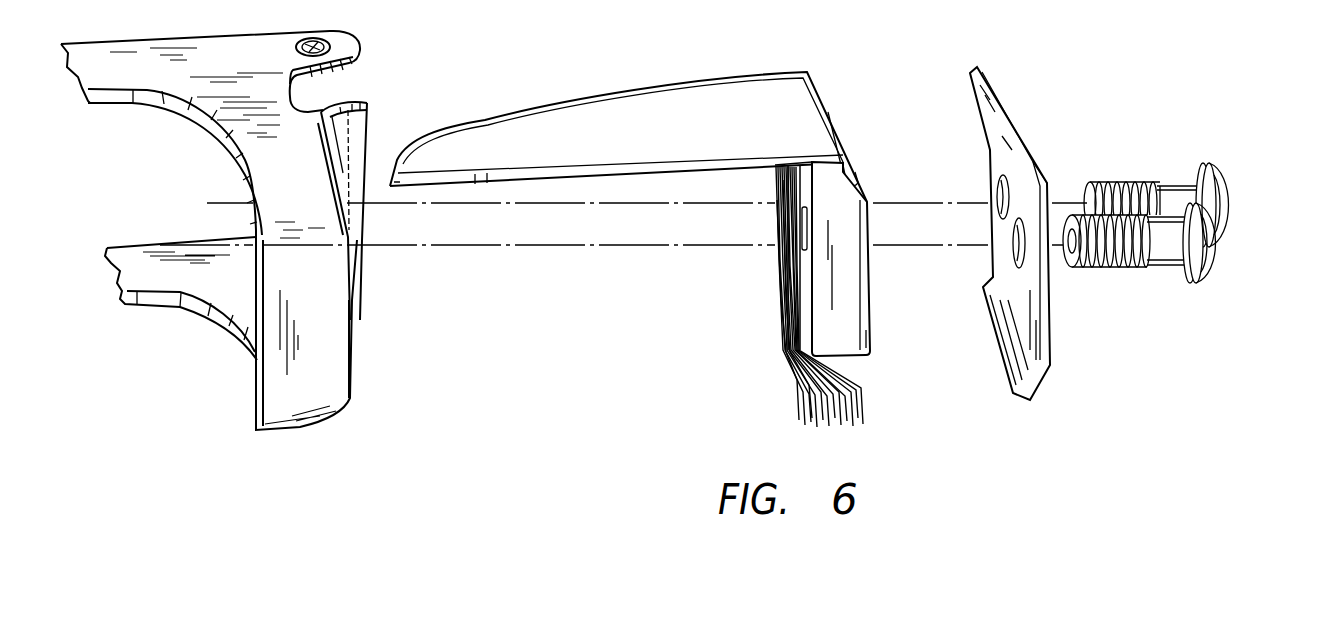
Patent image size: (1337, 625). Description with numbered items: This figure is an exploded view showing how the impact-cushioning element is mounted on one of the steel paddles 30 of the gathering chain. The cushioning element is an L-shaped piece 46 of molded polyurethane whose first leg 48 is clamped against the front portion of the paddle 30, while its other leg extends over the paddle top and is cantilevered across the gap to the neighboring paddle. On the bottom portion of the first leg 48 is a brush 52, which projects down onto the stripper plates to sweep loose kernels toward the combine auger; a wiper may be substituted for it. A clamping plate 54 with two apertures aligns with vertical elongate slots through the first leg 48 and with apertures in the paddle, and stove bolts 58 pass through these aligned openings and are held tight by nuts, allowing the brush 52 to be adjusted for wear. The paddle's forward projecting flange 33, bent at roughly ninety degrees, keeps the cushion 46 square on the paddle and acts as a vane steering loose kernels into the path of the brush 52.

The paddle 30 is at (353, 325).
The forward projecting flange 33 is at (367, 103).
The L-shaped piece 46 is at (620, 136).
The first leg 48 is at (833, 335).
The brush 52 is at (867, 410).
The clamping plate 54 is at (1013, 112).
The stove bolts 58 is at (1218, 236).